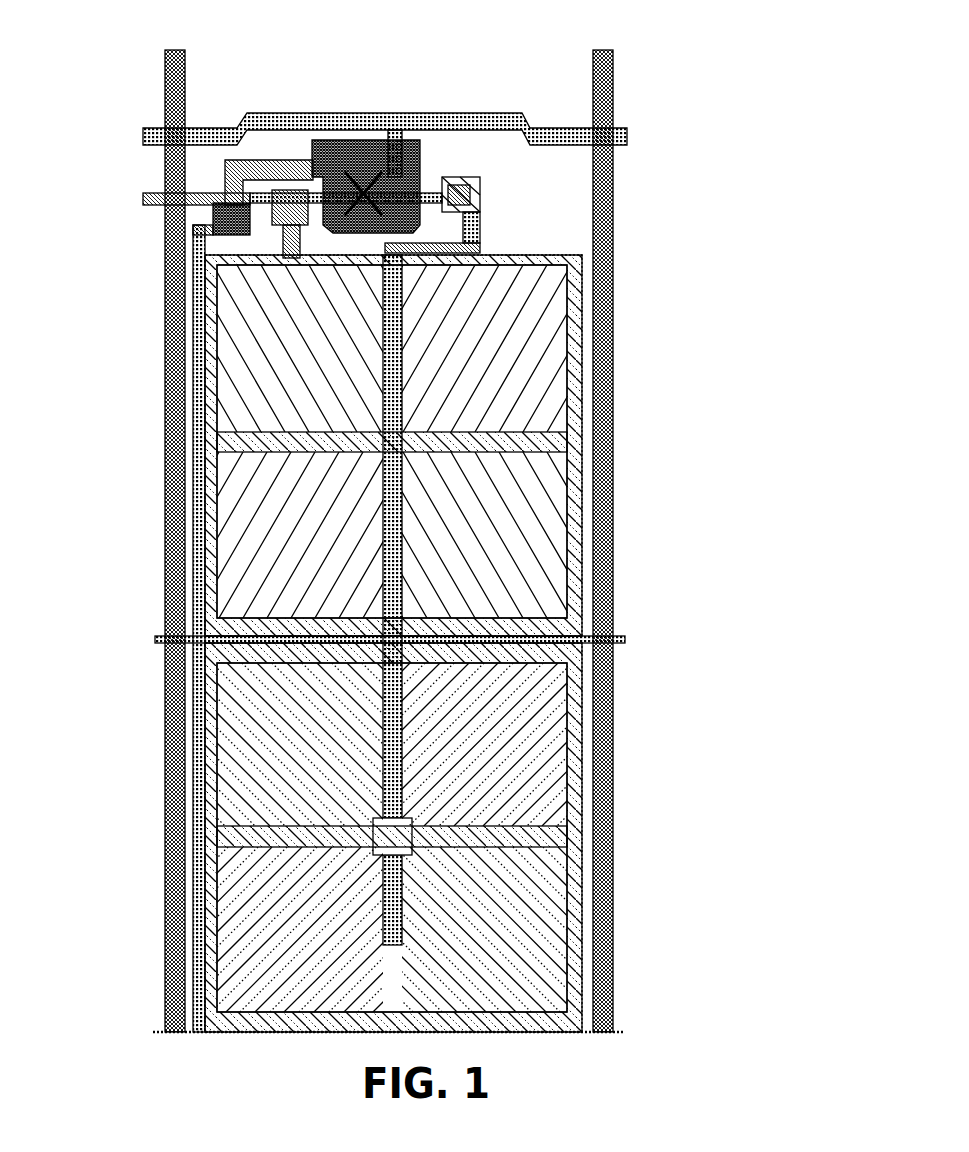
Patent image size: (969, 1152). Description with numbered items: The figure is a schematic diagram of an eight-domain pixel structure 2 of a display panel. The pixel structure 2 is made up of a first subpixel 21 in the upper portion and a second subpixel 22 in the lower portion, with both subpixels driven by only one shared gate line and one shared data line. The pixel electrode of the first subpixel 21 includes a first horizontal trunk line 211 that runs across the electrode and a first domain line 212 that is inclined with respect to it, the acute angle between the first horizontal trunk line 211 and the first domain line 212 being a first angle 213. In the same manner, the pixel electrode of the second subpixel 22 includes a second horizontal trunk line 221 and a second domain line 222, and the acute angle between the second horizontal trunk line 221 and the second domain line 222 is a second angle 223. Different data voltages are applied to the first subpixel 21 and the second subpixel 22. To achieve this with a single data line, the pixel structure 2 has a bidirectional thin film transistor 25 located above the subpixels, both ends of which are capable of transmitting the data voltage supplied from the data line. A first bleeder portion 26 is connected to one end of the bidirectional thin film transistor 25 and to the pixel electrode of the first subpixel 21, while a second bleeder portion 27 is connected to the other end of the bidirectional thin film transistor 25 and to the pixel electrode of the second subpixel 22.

The pixel structure 2 is at (653, 80).
The first subpixel 21 is at (555, 256).
The first horizontal trunk line 211 is at (470, 455).
The first domain line 212 is at (490, 364).
The first angle 213 is at (325, 430).
The second subpixel 22 is at (523, 655).
The second horizontal trunk line 221 is at (513, 838).
The second domain line 222 is at (493, 750).
The second angle 223 is at (300, 820).
The bidirectional thin film transistor 25 is at (368, 190).
The first bleeder portion 26 is at (480, 195).
The second bleeder portion 27 is at (290, 220).